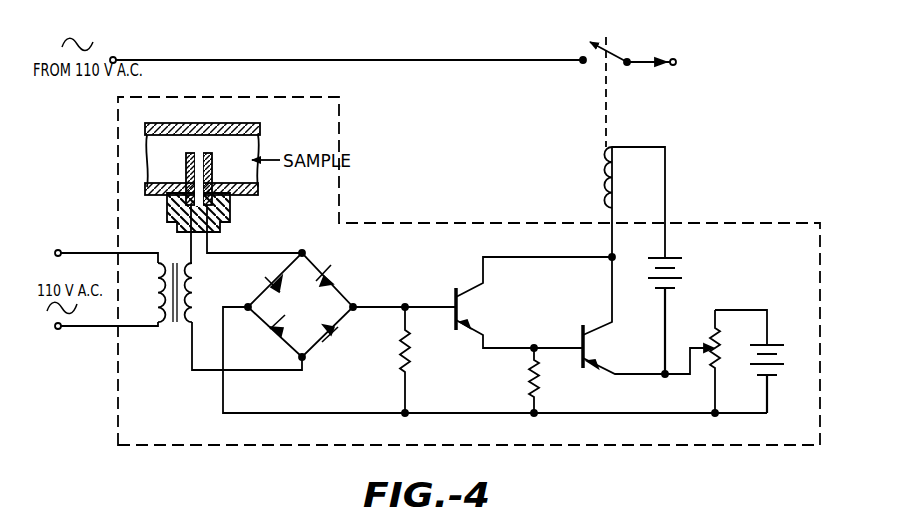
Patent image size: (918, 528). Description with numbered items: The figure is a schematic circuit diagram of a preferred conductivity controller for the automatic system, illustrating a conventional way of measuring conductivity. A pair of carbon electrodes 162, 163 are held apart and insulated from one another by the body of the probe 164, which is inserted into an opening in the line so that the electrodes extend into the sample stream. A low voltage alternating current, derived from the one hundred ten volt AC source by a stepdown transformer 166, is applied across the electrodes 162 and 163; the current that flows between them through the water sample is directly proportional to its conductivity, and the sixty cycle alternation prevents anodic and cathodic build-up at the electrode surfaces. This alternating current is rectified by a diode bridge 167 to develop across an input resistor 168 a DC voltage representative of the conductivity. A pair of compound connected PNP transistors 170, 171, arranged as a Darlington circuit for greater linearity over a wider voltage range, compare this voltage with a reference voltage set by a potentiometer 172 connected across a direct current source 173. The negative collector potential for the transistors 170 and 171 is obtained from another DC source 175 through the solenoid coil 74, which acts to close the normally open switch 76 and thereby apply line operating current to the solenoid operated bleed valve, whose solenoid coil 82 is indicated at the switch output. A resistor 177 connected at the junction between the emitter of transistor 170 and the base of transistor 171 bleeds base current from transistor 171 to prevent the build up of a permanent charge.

The carbon electrode 162 is at (188, 153).
The carbon electrode 163 is at (208, 153).
The probe 164 is at (228, 222).
The stepdown transformer 166 is at (160, 324).
The diode bridge 167 is at (309, 274).
The input resistor 168 is at (411, 356).
The PNP transistor 170 is at (456, 290).
The PNP transistor 171 is at (583, 328).
The potentiometer 172 is at (710, 358).
The direct current source 173 is at (772, 343).
The DC source 175 is at (683, 263).
The resistor 177 is at (540, 383).
The solenoid coil 74 is at (603, 170).
The normally open switch 76 is at (614, 56).
The bleed valve solenoid coil 82 is at (759, 65).